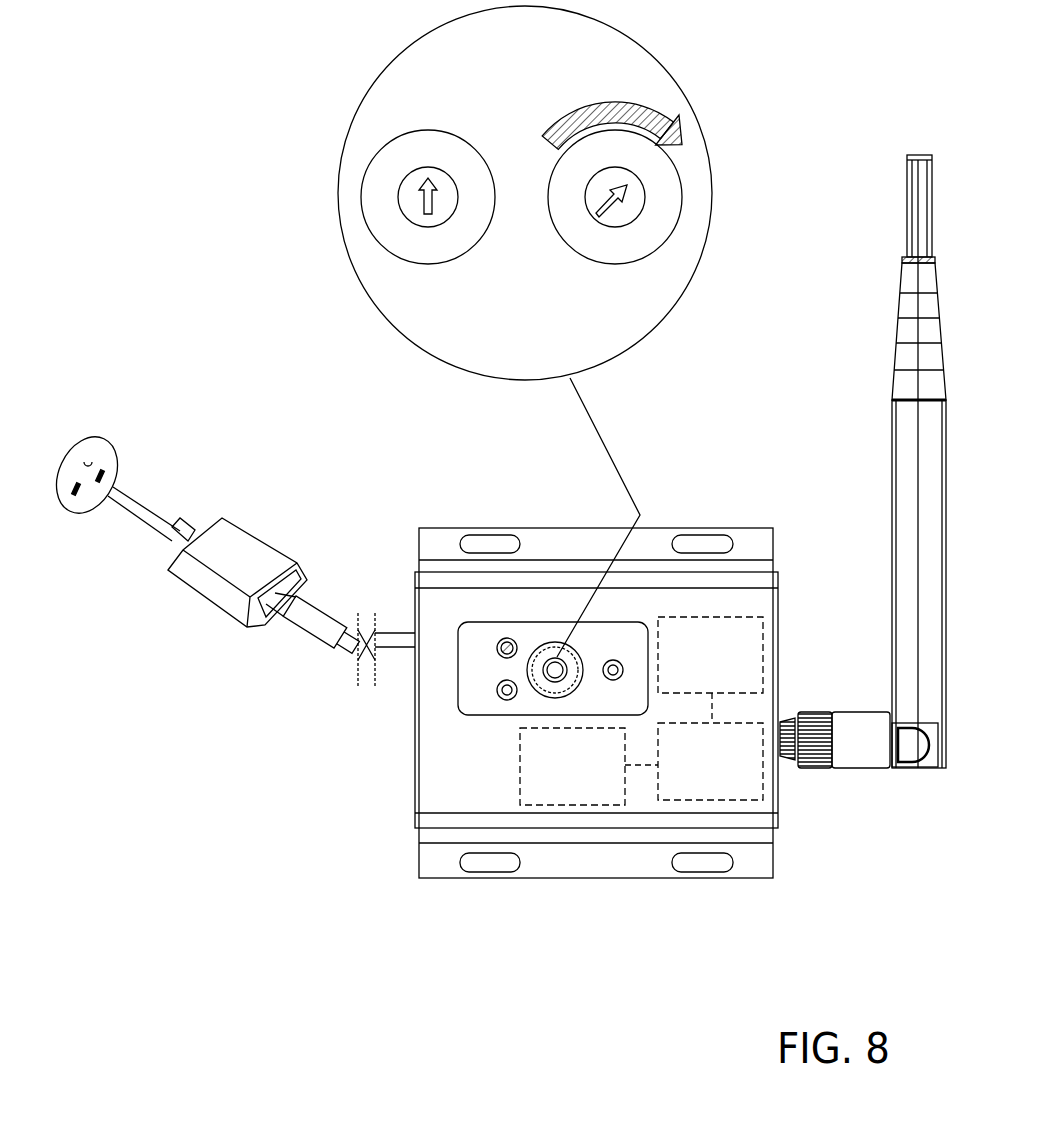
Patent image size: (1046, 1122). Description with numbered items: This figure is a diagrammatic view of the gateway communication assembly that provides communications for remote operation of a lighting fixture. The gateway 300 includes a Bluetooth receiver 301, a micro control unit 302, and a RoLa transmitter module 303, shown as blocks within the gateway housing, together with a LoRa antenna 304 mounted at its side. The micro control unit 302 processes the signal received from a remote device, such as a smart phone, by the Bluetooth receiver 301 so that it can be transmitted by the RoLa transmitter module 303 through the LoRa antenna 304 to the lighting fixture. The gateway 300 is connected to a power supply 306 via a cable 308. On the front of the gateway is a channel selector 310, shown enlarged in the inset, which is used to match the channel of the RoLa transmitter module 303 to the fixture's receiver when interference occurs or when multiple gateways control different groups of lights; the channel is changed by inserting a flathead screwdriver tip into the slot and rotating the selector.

The gateway 300 is at (266, 400).
The Bluetooth receiver 301 is at (689, 656).
The micro control unit 302 is at (551, 768).
The RoLa transmitter module 303 is at (689, 762).
The LoRa antenna 304 is at (913, 280).
The power supply 306 is at (243, 545).
The cable 308 is at (390, 640).
The channel selector 310 is at (557, 645).